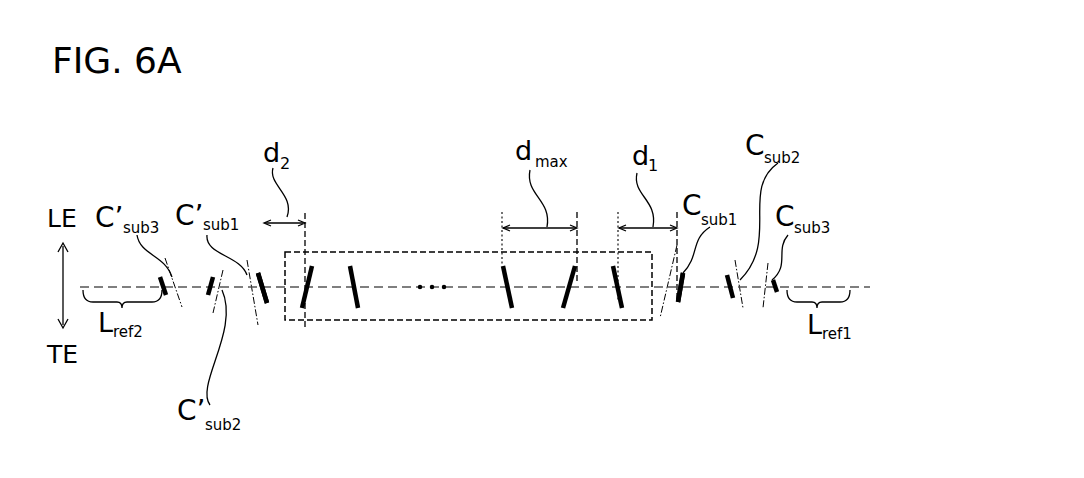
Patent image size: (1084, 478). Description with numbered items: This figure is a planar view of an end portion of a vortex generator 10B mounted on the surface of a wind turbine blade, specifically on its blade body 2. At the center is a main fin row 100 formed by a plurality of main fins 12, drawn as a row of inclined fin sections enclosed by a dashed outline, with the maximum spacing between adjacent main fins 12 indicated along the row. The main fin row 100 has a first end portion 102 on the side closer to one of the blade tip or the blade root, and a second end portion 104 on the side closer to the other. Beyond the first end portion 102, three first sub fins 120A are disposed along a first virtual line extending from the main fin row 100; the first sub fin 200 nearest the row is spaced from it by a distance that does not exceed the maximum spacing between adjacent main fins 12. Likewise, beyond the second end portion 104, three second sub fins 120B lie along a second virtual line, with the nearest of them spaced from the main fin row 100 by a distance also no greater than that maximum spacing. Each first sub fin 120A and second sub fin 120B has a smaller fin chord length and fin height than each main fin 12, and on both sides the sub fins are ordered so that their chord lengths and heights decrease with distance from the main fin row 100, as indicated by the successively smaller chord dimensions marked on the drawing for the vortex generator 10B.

The blade body 2 is at (925, 152).
The vortex generator 10B is at (868, 234).
The main fin 12 is at (358, 308).
The main fin row 100 is at (470, 252).
The first end portion 102 is at (630, 310).
The second end portion 104 is at (324, 257).
The first sub fin 120A is at (775, 292).
The second sub fin 120B is at (203, 303).
The first sub fin closest to the main fin row 200 is at (486, 370).